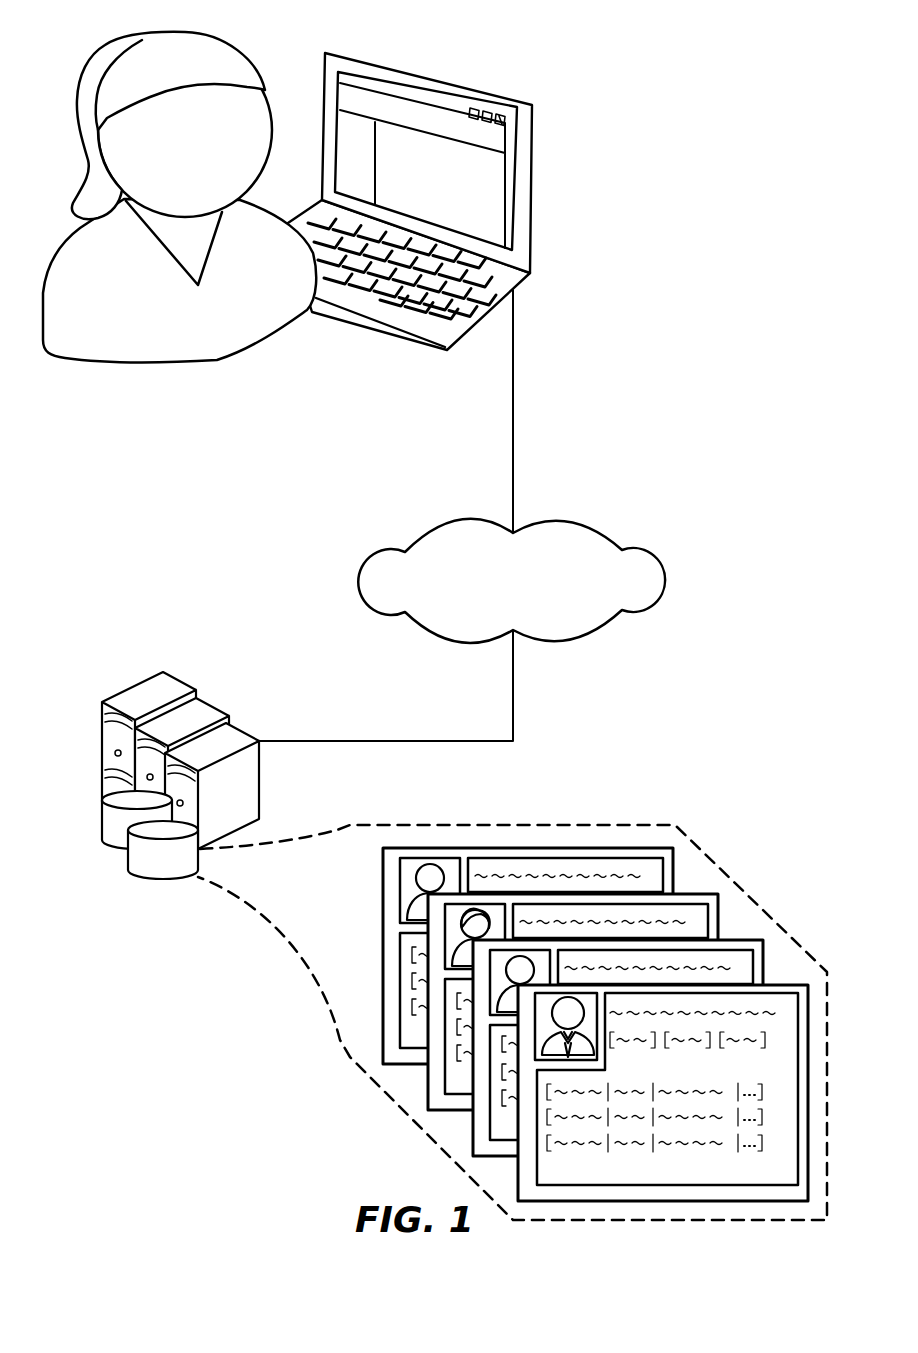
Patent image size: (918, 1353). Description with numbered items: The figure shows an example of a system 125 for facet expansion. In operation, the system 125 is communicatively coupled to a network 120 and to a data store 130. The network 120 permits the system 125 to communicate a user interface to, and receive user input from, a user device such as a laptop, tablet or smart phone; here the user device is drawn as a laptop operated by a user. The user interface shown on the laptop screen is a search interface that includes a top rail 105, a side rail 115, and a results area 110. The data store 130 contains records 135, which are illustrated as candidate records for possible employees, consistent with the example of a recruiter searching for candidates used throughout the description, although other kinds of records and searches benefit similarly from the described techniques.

The top rail 105 is at (427, 183).
The results area 110 is at (424, 133).
The side rail 115 is at (347, 152).
The network 120 is at (583, 522).
The system 125 is at (165, 672).
The data store 130 is at (127, 868).
The records 135 is at (383, 882).